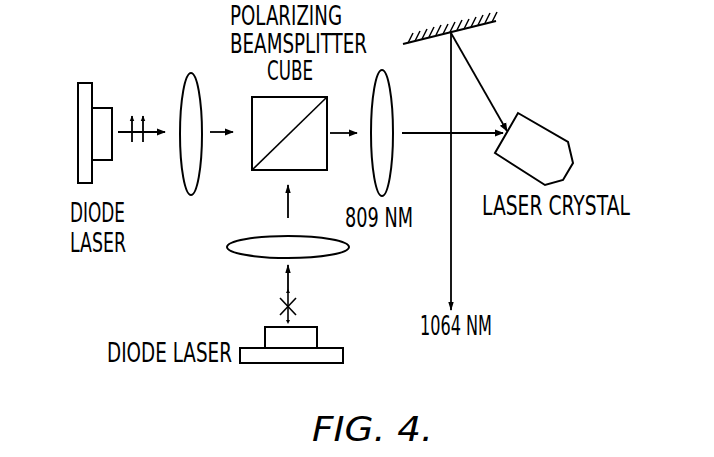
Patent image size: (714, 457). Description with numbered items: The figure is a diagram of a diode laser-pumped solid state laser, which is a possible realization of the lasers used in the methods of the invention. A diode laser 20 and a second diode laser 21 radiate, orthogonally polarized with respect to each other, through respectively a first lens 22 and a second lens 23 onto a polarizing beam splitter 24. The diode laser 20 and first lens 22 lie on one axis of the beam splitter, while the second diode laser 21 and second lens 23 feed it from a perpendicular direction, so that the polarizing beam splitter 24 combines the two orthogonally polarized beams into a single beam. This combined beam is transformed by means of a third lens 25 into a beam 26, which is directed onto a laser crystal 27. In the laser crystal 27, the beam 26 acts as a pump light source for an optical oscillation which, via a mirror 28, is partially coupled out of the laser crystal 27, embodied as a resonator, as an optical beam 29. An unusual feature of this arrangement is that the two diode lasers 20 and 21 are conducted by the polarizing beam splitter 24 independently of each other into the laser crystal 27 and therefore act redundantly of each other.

The diode laser 20 is at (82, 168).
The second diode laser 21 is at (330, 363).
The first lens 22 is at (188, 100).
The second lens 23 is at (250, 255).
The polarizing beam splitter 24 is at (256, 151).
The third lens 25 is at (384, 103).
The beam 26 is at (408, 136).
The laser crystal 27 is at (533, 137).
The mirror 28 is at (478, 28).
The optical beam 29 is at (452, 258).